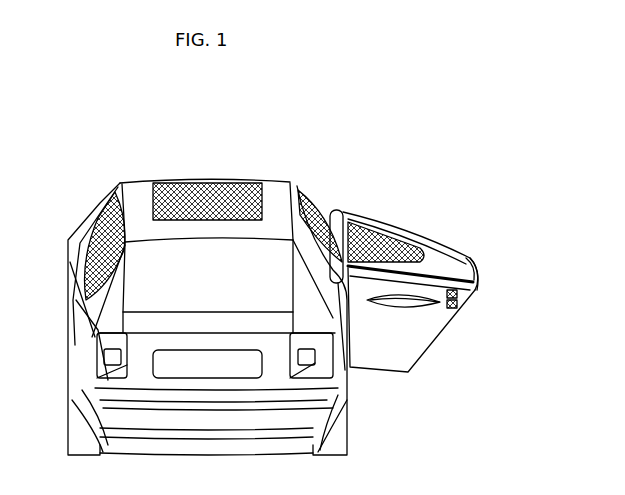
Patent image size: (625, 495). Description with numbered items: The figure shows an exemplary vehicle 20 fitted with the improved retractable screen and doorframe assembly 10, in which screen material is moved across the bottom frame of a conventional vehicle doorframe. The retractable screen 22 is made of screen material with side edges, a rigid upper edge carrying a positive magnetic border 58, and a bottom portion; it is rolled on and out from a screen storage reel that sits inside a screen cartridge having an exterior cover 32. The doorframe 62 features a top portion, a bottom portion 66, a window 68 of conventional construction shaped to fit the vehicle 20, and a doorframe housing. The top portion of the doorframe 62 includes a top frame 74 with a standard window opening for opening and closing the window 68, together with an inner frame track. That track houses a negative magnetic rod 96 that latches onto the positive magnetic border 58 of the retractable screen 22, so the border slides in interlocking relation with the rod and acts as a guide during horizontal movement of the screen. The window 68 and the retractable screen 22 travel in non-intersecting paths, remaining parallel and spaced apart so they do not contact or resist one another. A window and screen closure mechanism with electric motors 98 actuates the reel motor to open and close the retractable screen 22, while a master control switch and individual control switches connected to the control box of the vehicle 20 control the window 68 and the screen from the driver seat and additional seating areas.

The vehicle 20 is at (194, 163).
The retractable screen 22 is at (244, 180).
The retractable screen and doorframe assembly 10 is at (318, 193).
The exterior cover 32 is at (338, 211).
The negative magnetic rod 96 is at (394, 243).
The positive magnetic border 58 is at (436, 241).
The window 68 is at (473, 255).
The bottom portion of the doorframe 66 is at (480, 262).
The electric motors 98 is at (383, 313).
The doorframe 62 is at (451, 300).
The top frame 74 is at (457, 300).